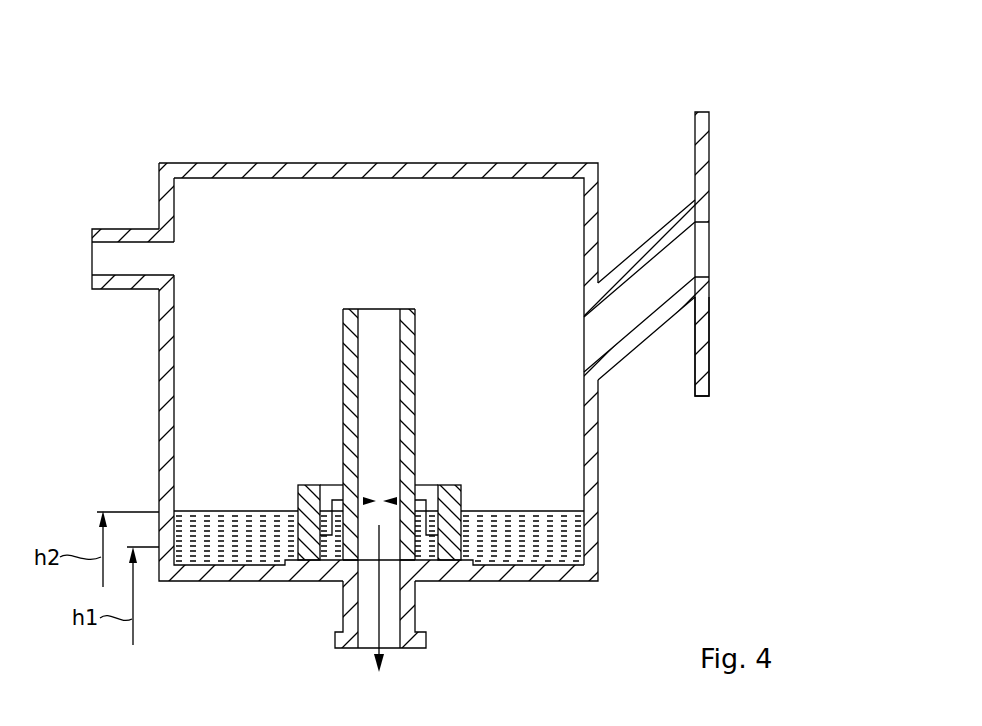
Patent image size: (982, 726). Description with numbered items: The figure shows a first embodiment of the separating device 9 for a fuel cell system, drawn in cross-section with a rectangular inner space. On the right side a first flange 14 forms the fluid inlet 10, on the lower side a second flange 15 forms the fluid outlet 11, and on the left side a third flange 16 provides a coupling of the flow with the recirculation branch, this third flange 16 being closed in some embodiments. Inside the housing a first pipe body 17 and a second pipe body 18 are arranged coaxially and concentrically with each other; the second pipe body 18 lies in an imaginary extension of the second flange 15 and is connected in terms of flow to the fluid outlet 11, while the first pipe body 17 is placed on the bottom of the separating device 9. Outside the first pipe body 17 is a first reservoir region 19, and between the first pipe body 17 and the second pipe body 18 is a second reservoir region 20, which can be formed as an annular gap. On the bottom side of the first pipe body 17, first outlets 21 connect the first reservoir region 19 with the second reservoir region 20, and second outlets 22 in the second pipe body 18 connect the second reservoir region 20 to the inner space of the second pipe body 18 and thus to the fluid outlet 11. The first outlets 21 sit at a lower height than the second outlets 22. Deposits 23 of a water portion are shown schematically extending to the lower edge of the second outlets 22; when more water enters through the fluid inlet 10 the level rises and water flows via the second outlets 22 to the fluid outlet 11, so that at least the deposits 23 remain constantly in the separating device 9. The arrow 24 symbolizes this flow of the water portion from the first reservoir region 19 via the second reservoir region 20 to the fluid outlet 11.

The separating device 9 is at (755, 152).
The fluid inlet 10 is at (703, 248).
The fluid outlet 11 is at (389, 648).
The first flange 14 is at (703, 367).
The second flange 15 is at (335, 640).
The third flange 16 is at (110, 230).
The first pipe body 17 is at (450, 487).
The second pipe body 18 is at (409, 309).
The first reservoir region 19 is at (509, 488).
The second reservoir region 20 is at (341, 489).
The first outlets 21 is at (325, 518).
The second outlets 22 is at (422, 498).
The deposits 23 is at (550, 538).
The arrow 24 is at (396, 499).